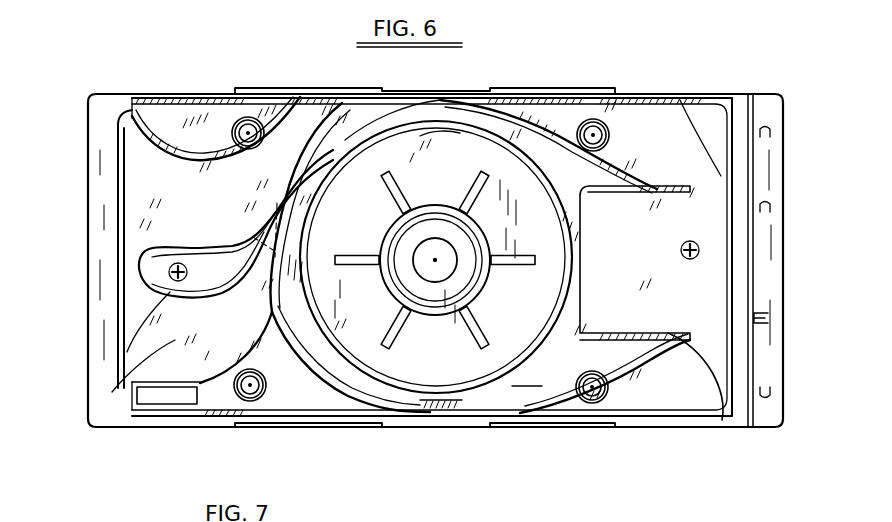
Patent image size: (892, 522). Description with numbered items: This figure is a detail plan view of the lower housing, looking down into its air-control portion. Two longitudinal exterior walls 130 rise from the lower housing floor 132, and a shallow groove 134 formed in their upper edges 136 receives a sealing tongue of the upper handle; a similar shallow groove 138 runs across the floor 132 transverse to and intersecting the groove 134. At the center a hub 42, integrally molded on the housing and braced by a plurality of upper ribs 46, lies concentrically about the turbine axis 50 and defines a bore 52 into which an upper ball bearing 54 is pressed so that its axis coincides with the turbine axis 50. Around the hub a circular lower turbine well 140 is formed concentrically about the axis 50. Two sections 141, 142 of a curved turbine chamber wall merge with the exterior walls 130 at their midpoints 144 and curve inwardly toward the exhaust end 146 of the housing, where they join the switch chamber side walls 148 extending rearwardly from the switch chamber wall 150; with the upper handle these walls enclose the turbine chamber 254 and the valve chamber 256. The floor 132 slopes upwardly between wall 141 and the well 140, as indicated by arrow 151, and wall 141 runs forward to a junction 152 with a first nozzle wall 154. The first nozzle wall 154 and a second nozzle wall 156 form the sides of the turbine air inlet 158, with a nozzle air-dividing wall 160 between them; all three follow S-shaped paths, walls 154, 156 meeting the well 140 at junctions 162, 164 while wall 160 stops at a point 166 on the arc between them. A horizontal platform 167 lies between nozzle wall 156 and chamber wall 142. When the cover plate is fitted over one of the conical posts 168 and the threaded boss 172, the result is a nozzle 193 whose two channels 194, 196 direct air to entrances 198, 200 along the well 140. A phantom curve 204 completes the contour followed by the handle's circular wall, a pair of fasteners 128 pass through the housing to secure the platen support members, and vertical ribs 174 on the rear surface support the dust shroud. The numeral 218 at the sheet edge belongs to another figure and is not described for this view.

In FIG. 6, the exterior walls 130 is at (617, 93).
In FIG. 6, the upper edges 136 is at (245, 93).
In FIG. 6, the shallow groove 134 is at (687, 99).
In FIG. 6, the midpoints 144 is at (468, 92).
In FIG. 6, the shallow groove 138 is at (725, 282).
In FIG. 6, the valve chamber 256 is at (748, 416).
In FIG. 6, the vertical ribs 174 is at (756, 318).
In FIG. 6, the exhaust end 146 is at (709, 152).
In FIG. 6, the turbine chamber wall section 142 is at (615, 173).
In FIG. 6, the switch chamber side walls 148 is at (650, 187).
In FIG. 6, the switch chamber wall 150 is at (646, 411).
In FIG. 6, the fasteners 128 is at (690, 241).
In FIG. 6, the conical posts 168 is at (605, 134).
In FIG. 6, the turbine air inlet 158 is at (87, 249).
In FIG. 6, the nozzle 193 is at (95, 299).
In FIG. 6, the channel 194 is at (157, 217).
In FIG. 6, the first nozzle wall 154 is at (203, 367).
In FIG. 6, the second nozzle wall 156 is at (178, 154).
In FIG. 6, the boss 172 is at (270, 110).
In FIG. 6, the horizontal platform 167 is at (574, 97).
In FIG. 6, the lower housing floor 132 is at (199, 178).
In FIG. 6, the junction 152 is at (298, 401).
In FIG. 6, the turbine chamber 254 is at (343, 388).
In FIG. 6, the point 166 is at (355, 150).
In FIG. 6, the entrance 198 is at (341, 188).
In FIG. 6, the entrance 200 is at (457, 136).
In FIG. 6, the turbine chamber wall section 141 is at (322, 398).
In FIG. 6, the lower turbine well 140 is at (453, 393).
In FIG. 6, the upward slope 151 is at (543, 299).
In FIG. 6, the phantom curve 204 is at (243, 228).
In FIG. 6, the nozzle air-dividing wall 160 is at (173, 340).
In FIG. 6, the channel 196 is at (115, 392).
In FIG. 6, the junction 162 is at (298, 229).
In FIG. 6, the hub 42 is at (383, 290).
In FIG. 6, the upper ball bearing 54 is at (455, 286).
In FIG. 6, the bore 52 is at (428, 241).
In FIG. 6, the turbine axis 50 is at (438, 261).
In FIG. 6, the upper ribs 46 is at (492, 180).
In FIG. 6, the junction 164 is at (525, 180).
In FIG. 7, the element of FIG. 7 218 is at (136, 512).